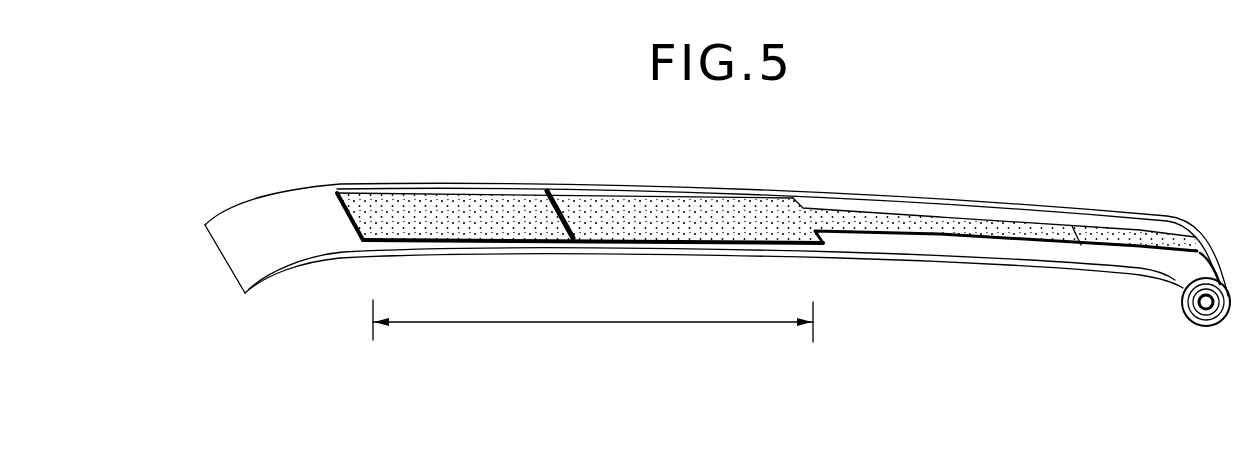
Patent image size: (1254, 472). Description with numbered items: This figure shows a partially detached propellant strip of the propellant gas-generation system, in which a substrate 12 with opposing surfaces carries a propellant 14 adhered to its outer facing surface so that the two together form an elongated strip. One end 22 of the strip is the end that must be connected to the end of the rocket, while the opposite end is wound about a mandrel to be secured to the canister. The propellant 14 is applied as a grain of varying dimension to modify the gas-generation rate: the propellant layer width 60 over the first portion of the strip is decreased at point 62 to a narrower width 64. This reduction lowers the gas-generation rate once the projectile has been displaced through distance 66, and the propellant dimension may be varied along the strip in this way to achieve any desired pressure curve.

The substrate 12 is at (867, 203).
The propellant 14 is at (382, 202).
The one end of the propellant strip 22 is at (263, 263).
The propellant layer width 60 is at (563, 212).
The point 62 is at (812, 231).
The width 64 is at (1060, 242).
The distance 66 is at (600, 325).